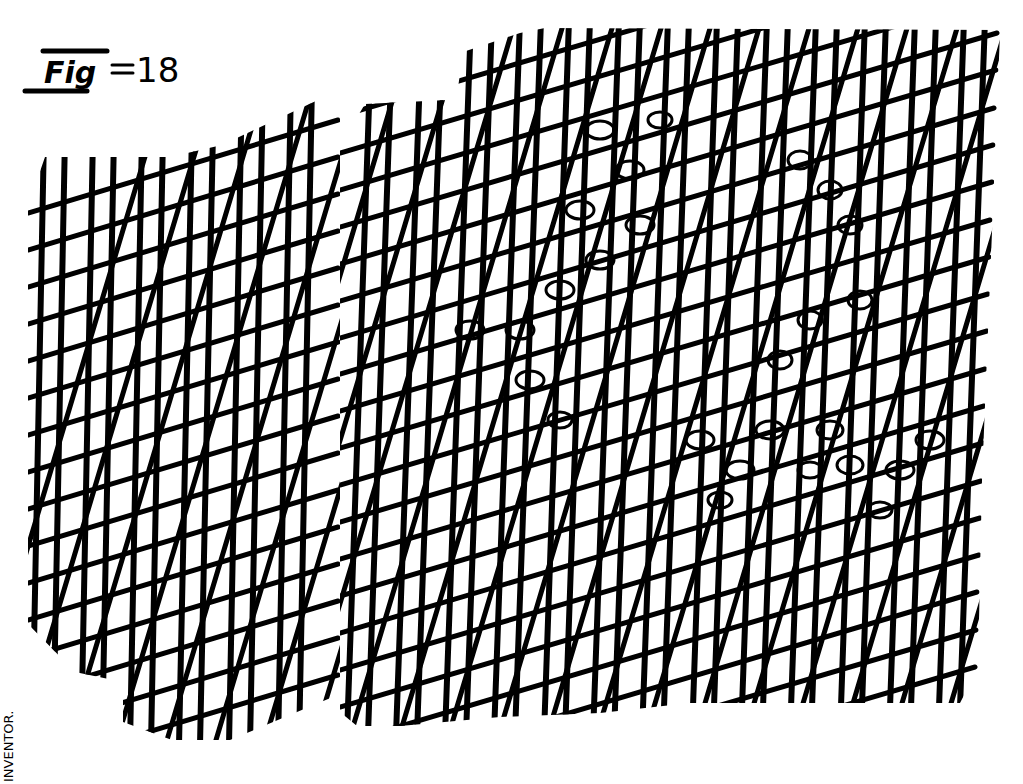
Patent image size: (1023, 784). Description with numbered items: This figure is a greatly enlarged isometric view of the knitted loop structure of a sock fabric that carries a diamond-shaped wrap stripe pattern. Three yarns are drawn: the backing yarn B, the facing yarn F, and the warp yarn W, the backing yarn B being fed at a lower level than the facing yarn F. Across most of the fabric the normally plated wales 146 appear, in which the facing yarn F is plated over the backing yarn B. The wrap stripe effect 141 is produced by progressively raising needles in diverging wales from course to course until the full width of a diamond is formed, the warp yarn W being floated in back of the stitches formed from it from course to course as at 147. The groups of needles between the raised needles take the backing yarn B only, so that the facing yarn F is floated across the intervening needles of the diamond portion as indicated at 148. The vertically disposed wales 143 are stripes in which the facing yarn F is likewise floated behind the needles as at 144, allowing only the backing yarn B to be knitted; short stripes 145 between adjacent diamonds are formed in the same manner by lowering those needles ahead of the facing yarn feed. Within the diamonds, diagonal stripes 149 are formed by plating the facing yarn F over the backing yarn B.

The wrap stripe effect 141 is at (612, 392).
The vertically disposed wales 143 is at (265, 135).
The floated facing yarn 144 is at (244, 255).
The short stripes 145 is at (558, 728).
The normally plated wales 146 is at (256, 424).
The floated wrap yarn 147 is at (710, 498).
The floated facing yarn in diamond portion 148 is at (660, 150).
The diagonal stripes 149 is at (928, 166).
The backing yarn B is at (34, 210).
The facing yarn F is at (80, 160).
The warp yarn W is at (962, 432).